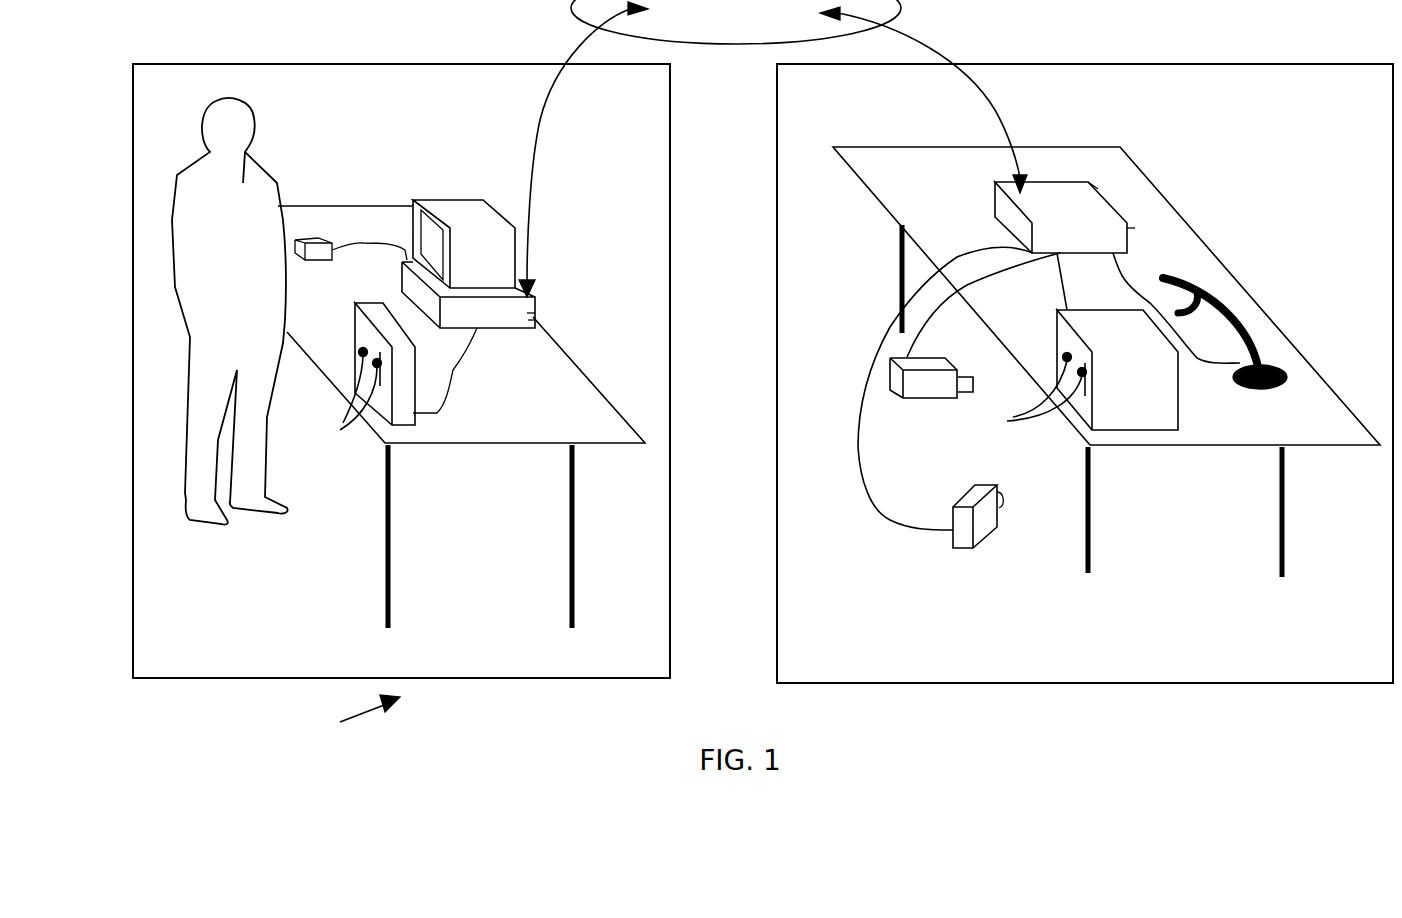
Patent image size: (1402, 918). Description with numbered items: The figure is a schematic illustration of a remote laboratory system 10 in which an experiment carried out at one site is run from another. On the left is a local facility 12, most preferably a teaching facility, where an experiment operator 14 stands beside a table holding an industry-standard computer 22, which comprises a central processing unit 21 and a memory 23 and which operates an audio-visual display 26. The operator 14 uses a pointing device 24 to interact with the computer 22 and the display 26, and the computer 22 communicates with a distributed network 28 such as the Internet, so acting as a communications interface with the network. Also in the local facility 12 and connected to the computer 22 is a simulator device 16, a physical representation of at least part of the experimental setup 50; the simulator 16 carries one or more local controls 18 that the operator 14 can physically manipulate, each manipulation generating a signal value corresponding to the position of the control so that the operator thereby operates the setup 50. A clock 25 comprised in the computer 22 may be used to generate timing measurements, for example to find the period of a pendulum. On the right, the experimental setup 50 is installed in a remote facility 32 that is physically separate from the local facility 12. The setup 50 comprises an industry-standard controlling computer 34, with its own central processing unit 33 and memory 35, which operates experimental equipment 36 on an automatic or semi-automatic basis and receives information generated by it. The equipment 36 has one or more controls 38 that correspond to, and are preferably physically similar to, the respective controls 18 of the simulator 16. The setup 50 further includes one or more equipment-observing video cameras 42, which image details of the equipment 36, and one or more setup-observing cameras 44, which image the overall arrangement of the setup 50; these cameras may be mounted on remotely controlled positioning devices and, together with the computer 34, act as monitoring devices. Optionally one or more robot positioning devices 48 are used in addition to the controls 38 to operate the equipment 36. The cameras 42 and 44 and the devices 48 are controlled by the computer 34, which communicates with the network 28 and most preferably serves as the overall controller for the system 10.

The remote laboratory system 10 is at (352, 717).
The local facility 12 is at (240, 62).
The experiment operator 14 is at (245, 185).
The simulator device 16 is at (398, 425).
The local controls 18 is at (343, 423).
The central processing unit 21 is at (530, 328).
The computer 22 is at (531, 305).
The memory 23 is at (497, 328).
The pointing device 24 is at (303, 240).
The clock 25 is at (527, 313).
The audio-visual display 26 is at (425, 204).
The distributed network 28 is at (726, 44).
The remote facility 32 is at (1178, 62).
The central processing unit 33 is at (1098, 189).
The controlling computer 34 is at (1046, 182).
The memory 35 is at (1127, 228).
The experimental equipment 36 is at (1131, 430).
The controls 38 is at (1035, 399).
The equipment-observing video cameras 42 is at (915, 398).
The setup-observing cameras 44 is at (967, 548).
The robot positioning devices 48 is at (1287, 365).
The experimental setup 50 is at (1318, 578).